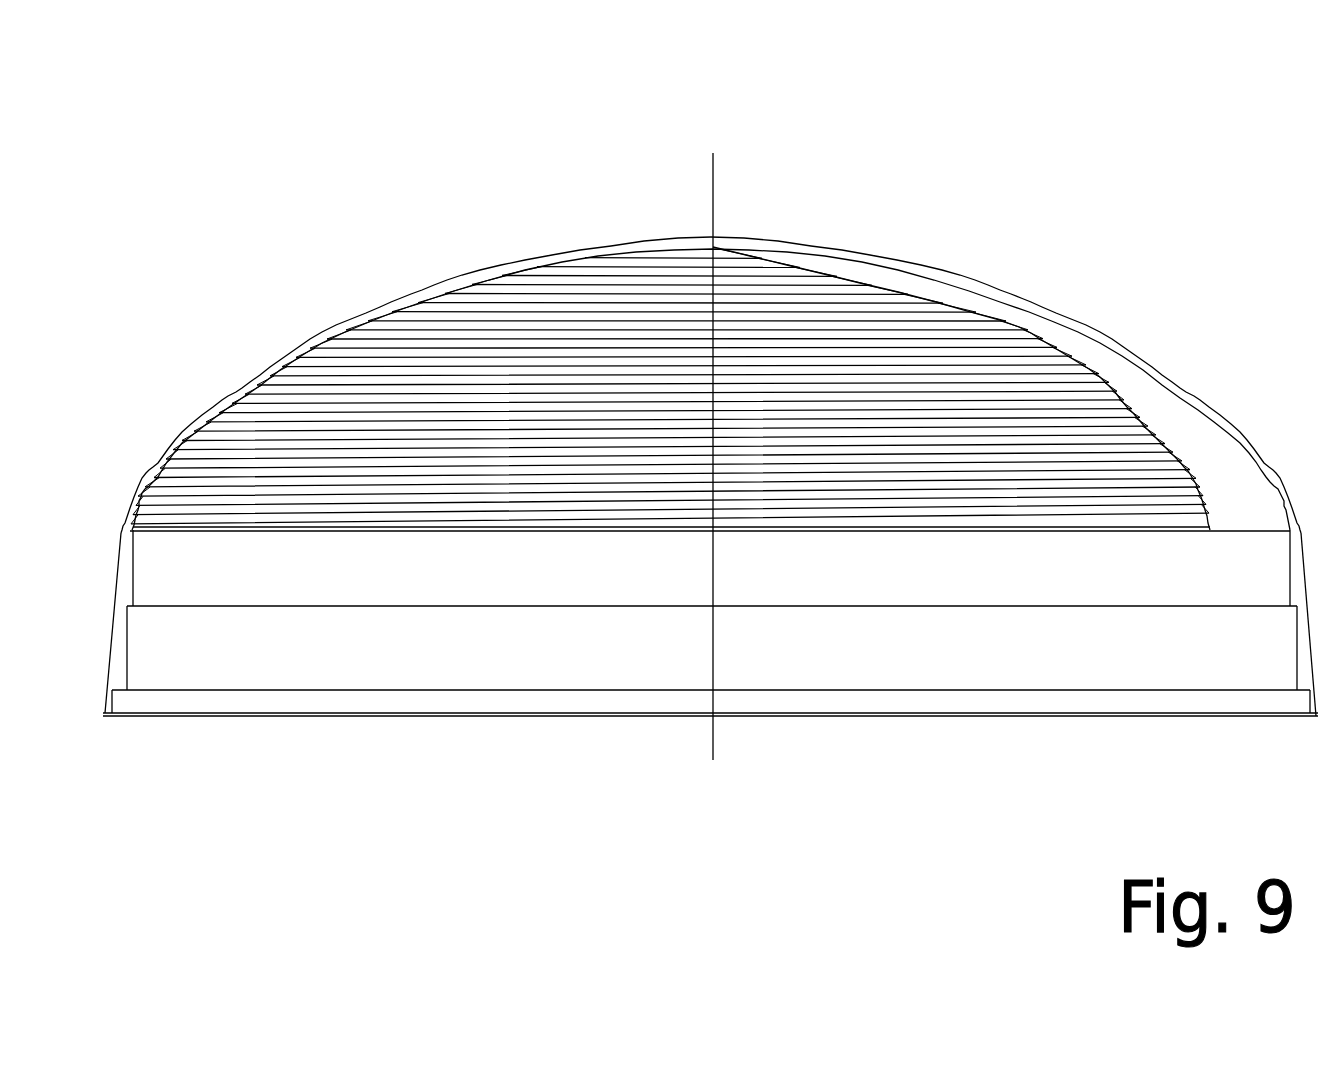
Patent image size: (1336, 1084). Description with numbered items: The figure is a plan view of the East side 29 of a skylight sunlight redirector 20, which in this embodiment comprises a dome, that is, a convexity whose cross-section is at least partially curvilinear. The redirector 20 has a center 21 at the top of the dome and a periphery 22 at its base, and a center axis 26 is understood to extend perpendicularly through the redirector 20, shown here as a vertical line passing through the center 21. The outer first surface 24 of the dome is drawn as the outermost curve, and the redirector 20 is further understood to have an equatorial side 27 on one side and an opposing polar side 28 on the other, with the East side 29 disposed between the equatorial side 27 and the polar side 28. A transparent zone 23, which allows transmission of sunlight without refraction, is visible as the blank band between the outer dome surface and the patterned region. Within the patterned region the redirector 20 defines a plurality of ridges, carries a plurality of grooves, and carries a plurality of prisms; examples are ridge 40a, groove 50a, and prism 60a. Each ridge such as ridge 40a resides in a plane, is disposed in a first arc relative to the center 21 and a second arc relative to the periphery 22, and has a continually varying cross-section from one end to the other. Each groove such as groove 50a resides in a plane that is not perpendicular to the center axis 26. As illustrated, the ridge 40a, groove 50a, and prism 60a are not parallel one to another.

The redirector 20 is at (231, 93).
The center 21 is at (713, 234).
The periphery 22 is at (305, 713).
The transparent zone 23 is at (1040, 330).
The first surface 24 is at (598, 236).
The center axis 26 is at (713, 182).
The equatorial side 27 is at (170, 440).
The polar side 28 is at (1228, 425).
The East side 29 is at (690, 480).
The ridge 40a is at (297, 362).
The groove 50a is at (500, 266).
The prism 60a is at (415, 292).